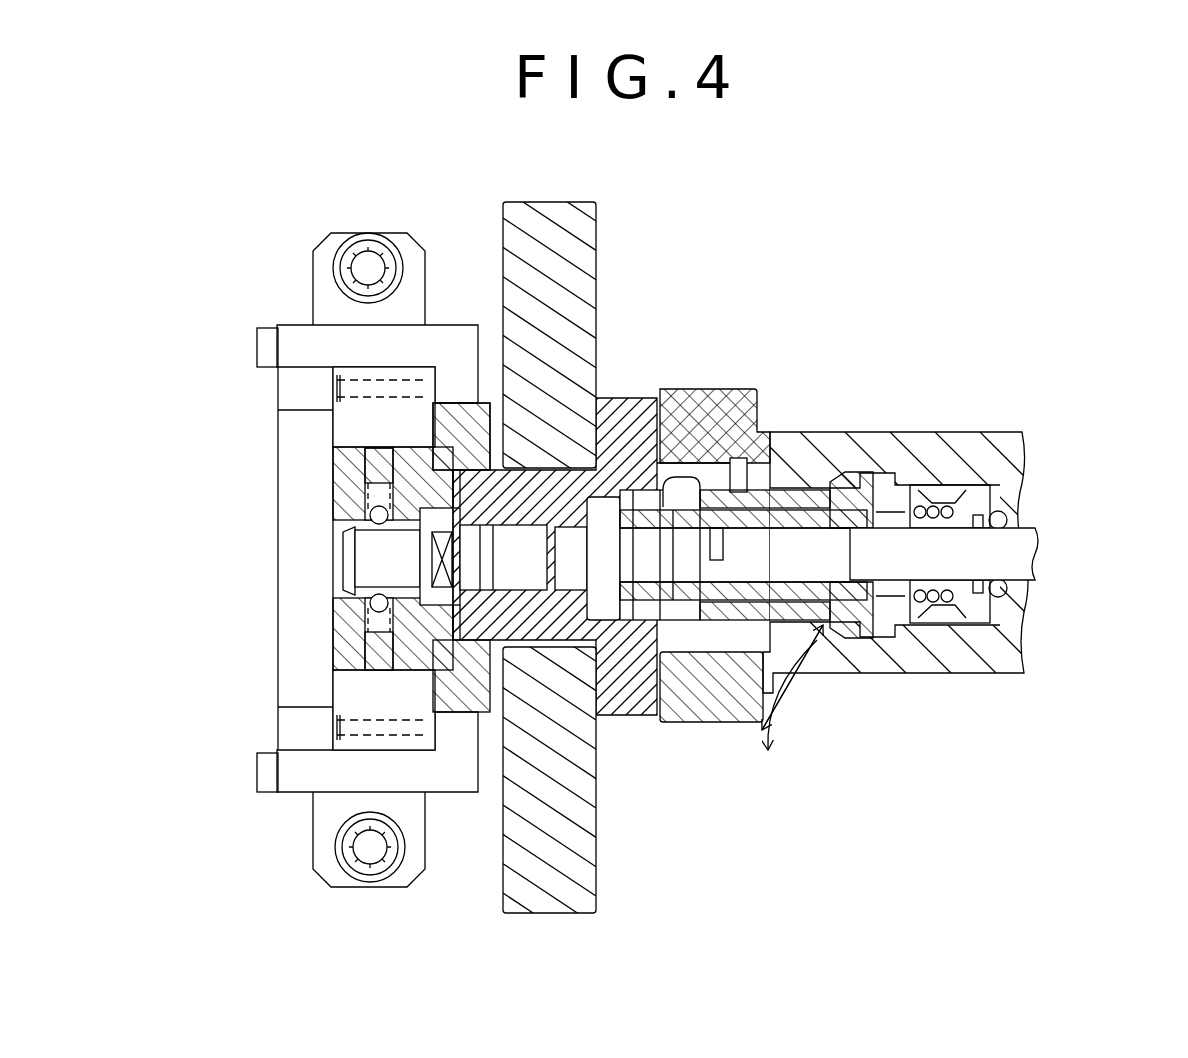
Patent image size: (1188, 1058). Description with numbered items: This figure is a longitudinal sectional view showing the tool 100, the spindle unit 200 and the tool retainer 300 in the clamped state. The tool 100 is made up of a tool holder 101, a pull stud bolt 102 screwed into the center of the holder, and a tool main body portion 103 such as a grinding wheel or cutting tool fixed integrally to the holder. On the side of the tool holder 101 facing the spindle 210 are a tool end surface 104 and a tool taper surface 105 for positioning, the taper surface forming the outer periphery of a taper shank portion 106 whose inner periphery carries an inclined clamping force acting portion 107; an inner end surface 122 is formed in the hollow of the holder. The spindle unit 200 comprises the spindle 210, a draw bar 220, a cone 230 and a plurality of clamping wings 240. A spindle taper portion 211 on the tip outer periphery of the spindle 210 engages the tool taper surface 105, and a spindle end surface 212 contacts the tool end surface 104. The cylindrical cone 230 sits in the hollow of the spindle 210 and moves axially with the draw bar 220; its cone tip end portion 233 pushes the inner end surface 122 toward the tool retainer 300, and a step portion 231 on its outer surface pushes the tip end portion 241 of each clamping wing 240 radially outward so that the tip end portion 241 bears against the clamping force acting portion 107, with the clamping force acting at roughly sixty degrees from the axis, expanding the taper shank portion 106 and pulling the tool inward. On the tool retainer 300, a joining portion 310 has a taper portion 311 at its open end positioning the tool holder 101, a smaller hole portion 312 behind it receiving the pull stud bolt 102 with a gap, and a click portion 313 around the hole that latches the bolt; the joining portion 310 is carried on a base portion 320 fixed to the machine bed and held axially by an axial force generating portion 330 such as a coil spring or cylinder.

The tool 100 is at (628, 228).
The tool holder 101 is at (603, 400).
The pull stud bolt 102 is at (380, 540).
The tool main body portion 103 is at (503, 222).
The tool end surface 104 is at (690, 392).
The tool taper surface 105 is at (710, 420).
The taper shank portion 106 is at (698, 645).
The clamping force acting portion 107 is at (750, 480).
The inner end surface 122 is at (490, 620).
The spindle unit 200 is at (926, 307).
The spindle 210 is at (962, 432).
The spindle taper portion 211 is at (730, 470).
The spindle end surface 212 is at (652, 410).
The draw bar 220 is at (1038, 545).
The cone 230 is at (640, 600).
The step portion 231 is at (668, 590).
The cone tip end portion 233 is at (540, 558).
The clamping wing 240 is at (822, 613).
The tip end portion 241 is at (848, 478).
The tool retainer 300 is at (256, 304).
The joining portion 310 is at (455, 420).
The taper portion 311 is at (460, 428).
The hole portion 312 is at (408, 522).
The click portion 313 is at (360, 502).
The base portion 320 is at (340, 340).
The axial force generating portion 330 is at (350, 388).